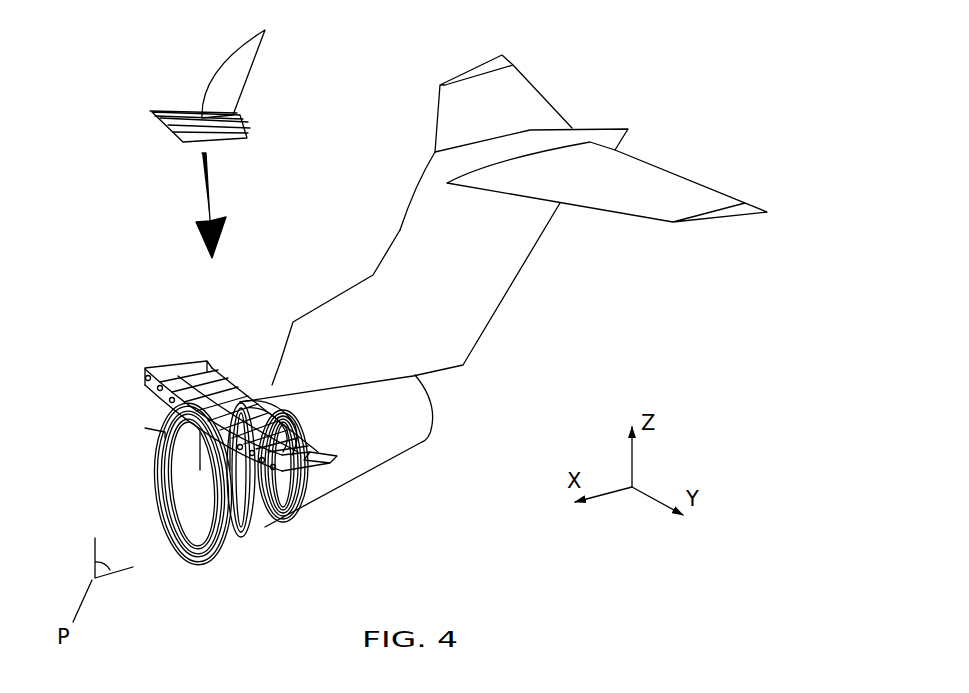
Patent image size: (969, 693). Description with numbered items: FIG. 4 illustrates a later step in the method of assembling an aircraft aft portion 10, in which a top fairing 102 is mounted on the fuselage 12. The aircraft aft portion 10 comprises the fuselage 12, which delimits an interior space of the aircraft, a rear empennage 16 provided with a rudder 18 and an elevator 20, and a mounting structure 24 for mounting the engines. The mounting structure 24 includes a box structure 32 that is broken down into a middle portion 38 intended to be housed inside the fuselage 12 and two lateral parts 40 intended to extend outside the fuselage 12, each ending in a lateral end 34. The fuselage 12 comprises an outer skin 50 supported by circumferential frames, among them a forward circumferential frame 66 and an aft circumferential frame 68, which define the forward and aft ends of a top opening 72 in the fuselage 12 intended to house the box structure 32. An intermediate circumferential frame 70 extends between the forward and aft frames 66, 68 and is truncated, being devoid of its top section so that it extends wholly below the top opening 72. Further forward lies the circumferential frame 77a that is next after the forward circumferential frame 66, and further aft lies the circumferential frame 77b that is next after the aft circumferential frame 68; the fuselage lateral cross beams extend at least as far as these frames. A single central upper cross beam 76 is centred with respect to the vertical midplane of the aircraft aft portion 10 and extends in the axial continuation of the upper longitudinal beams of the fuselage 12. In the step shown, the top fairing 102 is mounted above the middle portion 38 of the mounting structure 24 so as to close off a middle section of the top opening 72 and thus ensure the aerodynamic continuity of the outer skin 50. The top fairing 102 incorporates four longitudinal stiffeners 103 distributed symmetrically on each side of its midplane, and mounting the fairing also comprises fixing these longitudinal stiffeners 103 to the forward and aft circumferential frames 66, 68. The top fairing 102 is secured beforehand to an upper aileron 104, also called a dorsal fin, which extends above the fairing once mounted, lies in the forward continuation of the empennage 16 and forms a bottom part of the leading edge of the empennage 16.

The aircraft aft portion 10 is at (503, 291).
The fuselage 12 is at (372, 451).
The rear empennage 16 is at (503, 228).
The rudder 18 is at (490, 273).
The elevator 20 is at (652, 188).
The mounting structure 24 is at (197, 471).
The box structure 32 is at (197, 471).
The lateral ends 34 is at (226, 378).
The middle portion 38 is at (295, 425).
The lateral parts 40 is at (175, 380).
The outer skin 50 is at (425, 415).
The forward circumferential frame 66 is at (208, 555).
The aft circumferential frame 68 is at (268, 523).
The intermediate circumferential frame 70 is at (240, 540).
The top opening 72 is at (238, 395).
The central upper cross beam 76 is at (218, 408).
The circumferential frame 77a is at (177, 555).
The circumferential frame 77b is at (283, 517).
The top fairing 102 is at (223, 133).
The longitudinal stiffeners 103 is at (248, 122).
The upper aileron 104 is at (233, 73).